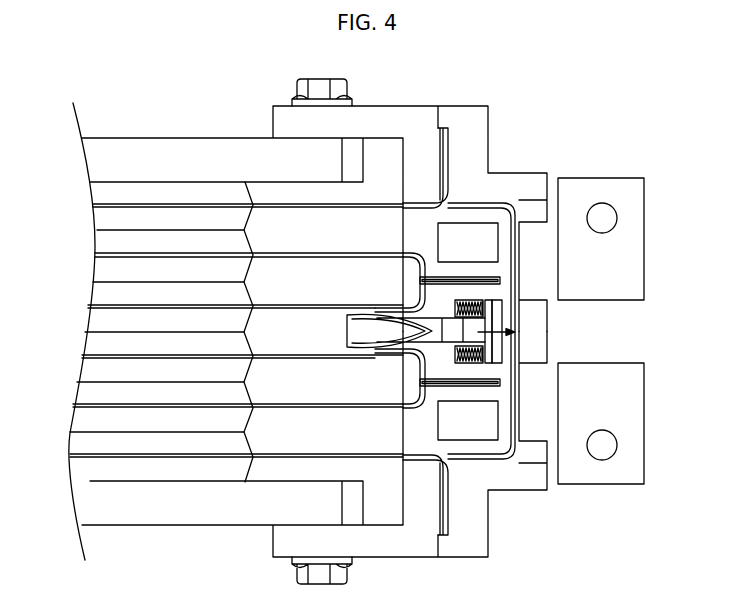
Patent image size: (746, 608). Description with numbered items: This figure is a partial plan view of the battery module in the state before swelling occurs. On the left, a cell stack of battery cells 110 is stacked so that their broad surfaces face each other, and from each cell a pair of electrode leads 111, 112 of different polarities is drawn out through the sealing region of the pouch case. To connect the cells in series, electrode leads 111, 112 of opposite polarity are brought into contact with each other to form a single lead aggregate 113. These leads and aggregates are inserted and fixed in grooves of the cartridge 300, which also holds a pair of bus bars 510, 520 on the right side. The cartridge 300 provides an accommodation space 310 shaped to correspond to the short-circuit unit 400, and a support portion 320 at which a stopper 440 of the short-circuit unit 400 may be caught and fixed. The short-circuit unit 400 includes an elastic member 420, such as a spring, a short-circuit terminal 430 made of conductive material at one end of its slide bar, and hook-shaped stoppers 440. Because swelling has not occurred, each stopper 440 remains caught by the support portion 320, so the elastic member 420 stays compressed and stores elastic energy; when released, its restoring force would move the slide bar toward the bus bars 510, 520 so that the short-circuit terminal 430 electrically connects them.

The battery cell 110 is at (105, 240).
The electrode lead 111 is at (442, 143).
The electrode lead 112 is at (440, 527).
The lead aggregate 113 is at (480, 278).
The cartridge 300 is at (507, 430).
The accommodation space 310 is at (508, 312).
The support portion 320 is at (386, 311).
The short-circuit unit 400 is at (512, 323).
The elastic member 420 is at (465, 300).
The short-circuit terminal 430 is at (497, 352).
The stopper 440 is at (347, 340).
The bus bar 510 is at (630, 248).
The bus bar 520 is at (630, 400).